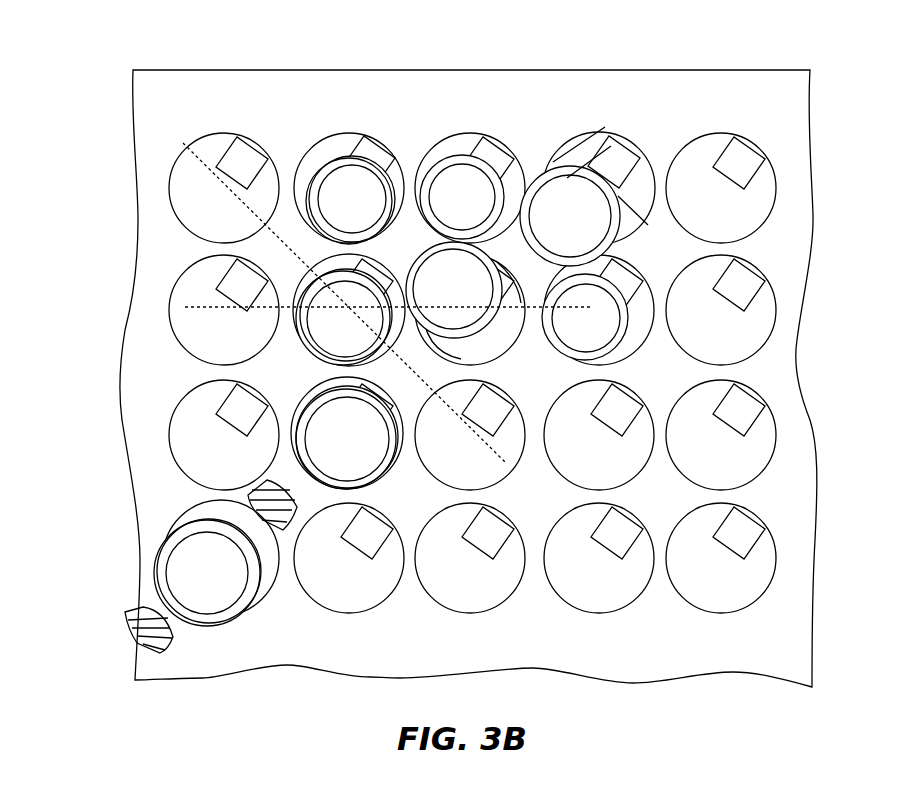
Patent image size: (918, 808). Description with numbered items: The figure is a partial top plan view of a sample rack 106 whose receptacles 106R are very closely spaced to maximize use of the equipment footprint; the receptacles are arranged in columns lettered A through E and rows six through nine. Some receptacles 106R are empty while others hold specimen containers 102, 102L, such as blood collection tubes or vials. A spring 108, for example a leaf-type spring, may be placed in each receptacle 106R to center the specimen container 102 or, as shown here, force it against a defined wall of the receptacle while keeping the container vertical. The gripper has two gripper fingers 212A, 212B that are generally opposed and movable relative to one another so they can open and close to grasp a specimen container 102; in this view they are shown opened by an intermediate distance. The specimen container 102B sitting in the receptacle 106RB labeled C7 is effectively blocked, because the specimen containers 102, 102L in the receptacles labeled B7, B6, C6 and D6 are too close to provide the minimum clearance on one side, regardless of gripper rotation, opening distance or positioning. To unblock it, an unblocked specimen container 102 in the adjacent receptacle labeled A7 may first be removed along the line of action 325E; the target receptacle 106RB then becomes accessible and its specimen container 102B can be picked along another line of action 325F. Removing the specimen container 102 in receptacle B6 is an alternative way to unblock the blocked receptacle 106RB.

The sample rack 106 is at (160, 64).
The receptacle 106R is at (318, 142).
The blocked receptacle 106RB is at (505, 357).
The specimen container 102 is at (320, 170).
The blocked specimen container 102B is at (421, 255).
The specimen container 102L is at (595, 150).
The spring 108 is at (235, 278).
The line of action 325E is at (217, 177).
The line of action 325F is at (207, 304).
The gripper finger 212A is at (128, 616).
The gripper finger 212B is at (280, 497).